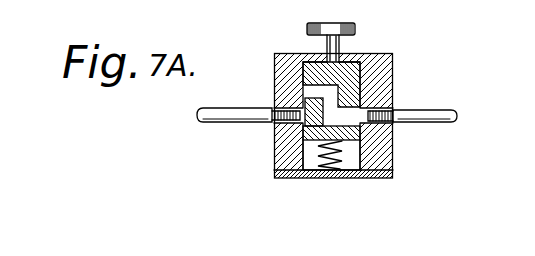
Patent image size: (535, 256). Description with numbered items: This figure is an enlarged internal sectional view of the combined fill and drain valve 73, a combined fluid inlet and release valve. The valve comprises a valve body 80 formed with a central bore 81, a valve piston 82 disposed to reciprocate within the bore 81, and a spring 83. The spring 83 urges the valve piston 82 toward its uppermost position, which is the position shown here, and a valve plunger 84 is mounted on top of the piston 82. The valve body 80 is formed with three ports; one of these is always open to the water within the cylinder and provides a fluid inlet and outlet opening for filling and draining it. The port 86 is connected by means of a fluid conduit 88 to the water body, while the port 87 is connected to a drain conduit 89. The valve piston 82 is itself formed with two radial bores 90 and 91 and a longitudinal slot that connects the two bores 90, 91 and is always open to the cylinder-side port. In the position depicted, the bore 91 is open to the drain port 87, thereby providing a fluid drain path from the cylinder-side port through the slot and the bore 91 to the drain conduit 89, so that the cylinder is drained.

The combined fill and drain valve 73 is at (271, 37).
The valve body 80 is at (390, 157).
The central bore 81 is at (352, 148).
The valve piston 82 is at (348, 82).
The spring 83 is at (325, 168).
The valve plunger 84 is at (350, 40).
The port 86 is at (265, 122).
The drain port 87 is at (388, 118).
The fluid conduit 88 is at (212, 122).
The drain conduit 89 is at (443, 111).
The radial bore 90 is at (306, 92).
The radial bore 91 is at (347, 141).